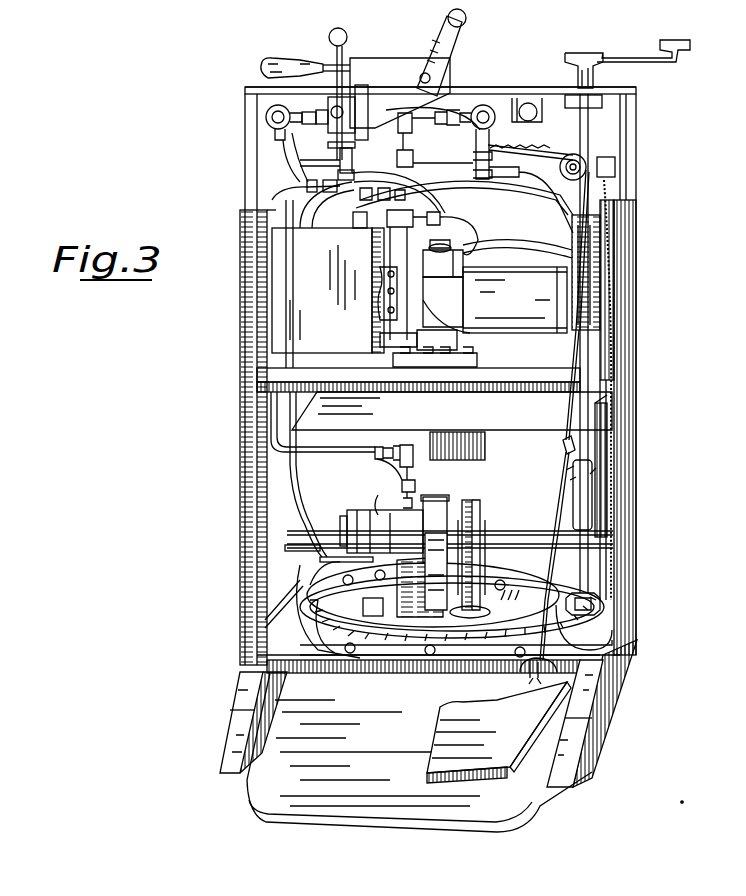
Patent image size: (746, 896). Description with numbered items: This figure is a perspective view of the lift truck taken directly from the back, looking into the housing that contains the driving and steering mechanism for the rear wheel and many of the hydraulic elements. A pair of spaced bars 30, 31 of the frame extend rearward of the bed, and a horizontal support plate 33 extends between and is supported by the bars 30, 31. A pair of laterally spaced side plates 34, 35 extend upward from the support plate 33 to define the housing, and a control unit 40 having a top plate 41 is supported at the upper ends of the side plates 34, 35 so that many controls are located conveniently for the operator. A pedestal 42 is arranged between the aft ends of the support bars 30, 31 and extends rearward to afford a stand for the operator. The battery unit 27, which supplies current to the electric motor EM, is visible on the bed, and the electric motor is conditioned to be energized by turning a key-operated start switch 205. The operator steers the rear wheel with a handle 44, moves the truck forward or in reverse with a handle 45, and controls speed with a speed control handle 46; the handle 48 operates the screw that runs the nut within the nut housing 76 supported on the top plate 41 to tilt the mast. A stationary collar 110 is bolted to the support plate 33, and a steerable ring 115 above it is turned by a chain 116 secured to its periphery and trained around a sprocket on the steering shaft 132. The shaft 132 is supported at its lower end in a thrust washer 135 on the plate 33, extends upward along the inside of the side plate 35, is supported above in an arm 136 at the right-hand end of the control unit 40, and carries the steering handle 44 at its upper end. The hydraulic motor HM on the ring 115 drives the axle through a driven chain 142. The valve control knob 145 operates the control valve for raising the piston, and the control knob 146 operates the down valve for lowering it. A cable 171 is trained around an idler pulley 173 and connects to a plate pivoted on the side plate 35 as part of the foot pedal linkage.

The battery unit 27 is at (460, 420).
The spaced bar 30 is at (240, 725).
The spaced bar 31 is at (608, 722).
The horizontal support plate 33 is at (468, 676).
The side plate 34 is at (244, 544).
The side plate 35 is at (622, 456).
The control unit 40 is at (482, 88).
The top plate 41 is at (248, 90).
The pedestal 42 is at (364, 786).
The steering handle 44 is at (626, 60).
The handle 45 is at (332, 40).
The speed control handle 46 is at (280, 62).
The handle 48 is at (438, 48).
The nut housing 76 is at (396, 90).
The stationary collar 110 is at (300, 628).
The steerable ring 115 is at (480, 578).
The chain 116 is at (402, 636).
The steering shaft 132 is at (592, 570).
The thrust washer 135 is at (605, 604).
The arm 136 is at (606, 104).
The driven chain 142 is at (470, 520).
The valve control knob 145 is at (488, 106).
The control knob 146 is at (265, 125).
The cable 171 is at (598, 222).
The idler pulley 173 is at (600, 160).
The key-operated start switch 205 is at (530, 105).